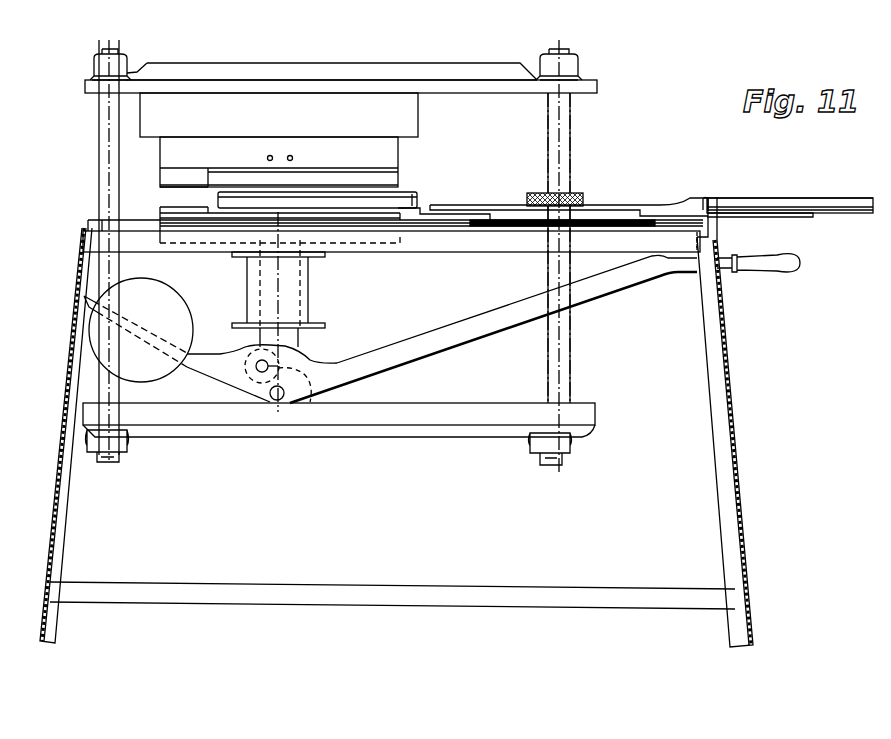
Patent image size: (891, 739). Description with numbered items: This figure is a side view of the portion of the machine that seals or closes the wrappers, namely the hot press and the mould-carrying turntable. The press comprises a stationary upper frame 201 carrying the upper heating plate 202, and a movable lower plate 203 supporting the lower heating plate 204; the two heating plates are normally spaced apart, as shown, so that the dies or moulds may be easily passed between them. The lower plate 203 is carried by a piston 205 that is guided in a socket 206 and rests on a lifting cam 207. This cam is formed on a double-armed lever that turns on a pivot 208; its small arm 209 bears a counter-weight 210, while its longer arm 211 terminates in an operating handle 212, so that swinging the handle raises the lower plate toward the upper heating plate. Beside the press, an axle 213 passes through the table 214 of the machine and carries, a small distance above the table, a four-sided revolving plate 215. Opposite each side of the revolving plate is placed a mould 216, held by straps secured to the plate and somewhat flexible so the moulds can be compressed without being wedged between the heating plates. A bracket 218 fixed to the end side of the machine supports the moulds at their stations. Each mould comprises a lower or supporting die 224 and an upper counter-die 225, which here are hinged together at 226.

The stationary upper frame 201 is at (387, 158).
The upper heating plate 202 is at (397, 178).
The movable lower plate 203 is at (173, 212).
The lower heating plate 204 is at (392, 218).
The piston 205 is at (300, 277).
The socket 206 is at (305, 301).
The lifting cam 207 is at (244, 347).
The pivot 208 is at (268, 410).
The small arm 209 is at (218, 366).
The counter-weight 210 is at (192, 312).
The longer arm 211 is at (482, 328).
The operating handle 212 is at (777, 271).
The axle 213 is at (562, 146).
The table 214 is at (498, 228).
The revolving plate 215 is at (593, 213).
The mould 216 is at (752, 190).
The bracket 218 is at (780, 220).
The lower or supporting die 224 is at (220, 194).
The upper counter-die 225 is at (163, 187).
The hinge 226 is at (705, 200).